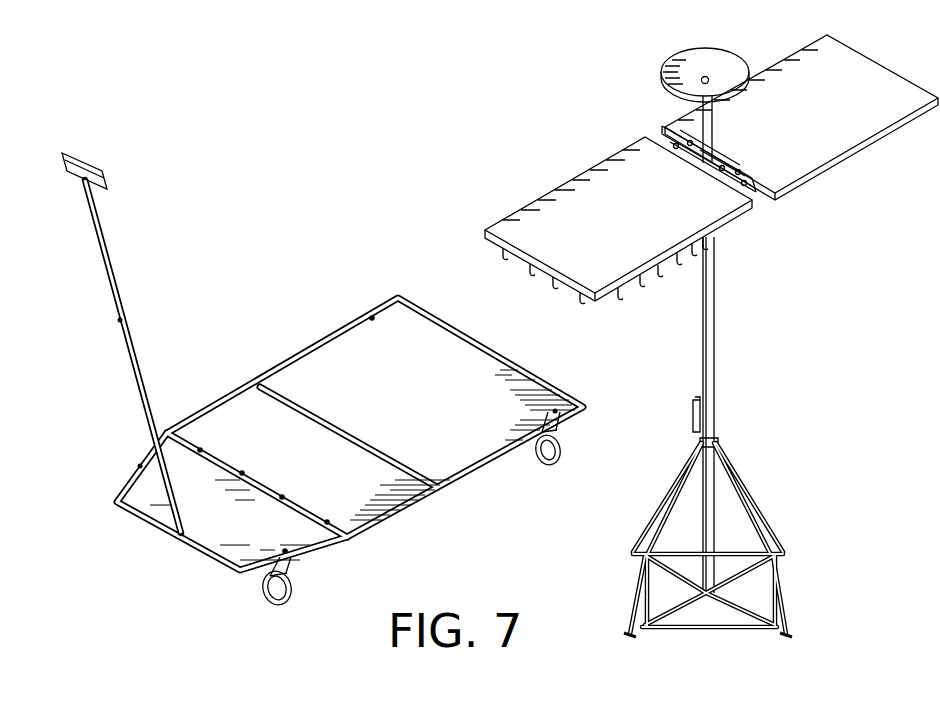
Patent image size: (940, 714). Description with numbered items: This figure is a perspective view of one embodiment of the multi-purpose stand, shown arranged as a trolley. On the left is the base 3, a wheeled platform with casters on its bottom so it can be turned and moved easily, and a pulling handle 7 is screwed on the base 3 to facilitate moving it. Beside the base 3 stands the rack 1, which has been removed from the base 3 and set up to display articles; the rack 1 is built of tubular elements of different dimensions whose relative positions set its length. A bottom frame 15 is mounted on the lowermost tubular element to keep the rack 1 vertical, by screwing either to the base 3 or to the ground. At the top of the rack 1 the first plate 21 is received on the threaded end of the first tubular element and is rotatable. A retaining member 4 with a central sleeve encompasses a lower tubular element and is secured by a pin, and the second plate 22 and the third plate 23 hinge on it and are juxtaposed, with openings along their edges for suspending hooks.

The rack 1 is at (723, 308).
The base 3 is at (396, 505).
The retaining member 4 is at (752, 182).
The pulling handle 7 is at (108, 277).
The bottom frame 15 is at (748, 502).
The first plate 21 is at (709, 55).
The second plate 22 is at (862, 63).
The third plate 23 is at (586, 193).